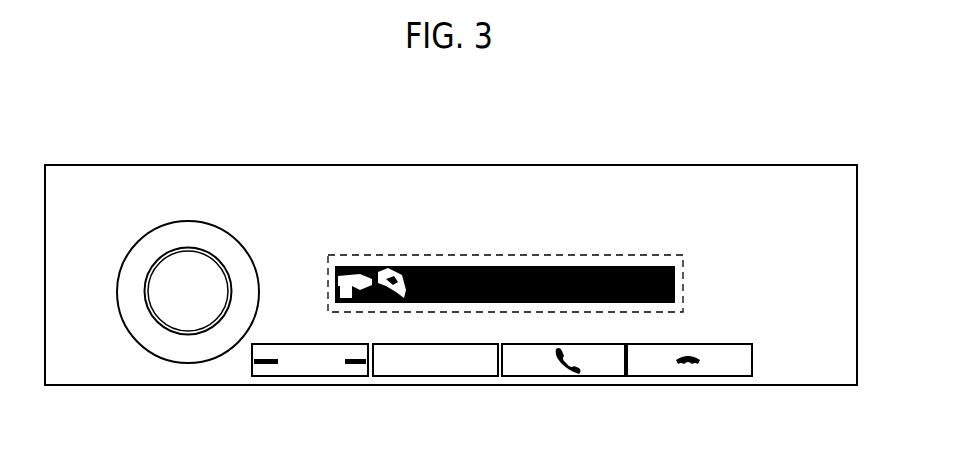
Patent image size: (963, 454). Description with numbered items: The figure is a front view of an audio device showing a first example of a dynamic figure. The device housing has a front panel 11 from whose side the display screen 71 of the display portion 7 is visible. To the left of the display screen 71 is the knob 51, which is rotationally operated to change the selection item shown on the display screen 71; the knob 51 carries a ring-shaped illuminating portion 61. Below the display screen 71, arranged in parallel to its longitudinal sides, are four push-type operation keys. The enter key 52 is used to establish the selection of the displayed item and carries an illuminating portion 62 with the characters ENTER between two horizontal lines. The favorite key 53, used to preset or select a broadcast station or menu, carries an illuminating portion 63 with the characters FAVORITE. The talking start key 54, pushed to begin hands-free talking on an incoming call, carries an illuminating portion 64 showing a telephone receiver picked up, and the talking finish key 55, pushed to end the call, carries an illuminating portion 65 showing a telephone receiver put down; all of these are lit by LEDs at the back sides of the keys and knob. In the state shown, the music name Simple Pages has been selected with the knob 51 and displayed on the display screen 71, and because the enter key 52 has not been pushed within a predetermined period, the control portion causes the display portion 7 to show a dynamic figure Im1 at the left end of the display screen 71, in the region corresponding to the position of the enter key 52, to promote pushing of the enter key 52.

The front panel 11 is at (663, 178).
The display portion 7 is at (390, 255).
The dynamic figure Im1 is at (357, 266).
The display screen 71 is at (503, 266).
The knob 51 is at (186, 362).
The ring-shaped illuminating portion 61 is at (165, 330).
The enter key 52 is at (310, 376).
The illuminating portion 62 is at (265, 362).
The favorite key 53 is at (455, 376).
The illuminating portion 63 is at (400, 372).
The talking start key 54 is at (590, 376).
The illuminating portion 64 is at (555, 362).
The talking finish key 55 is at (717, 376).
The illuminating portion 65 is at (672, 361).